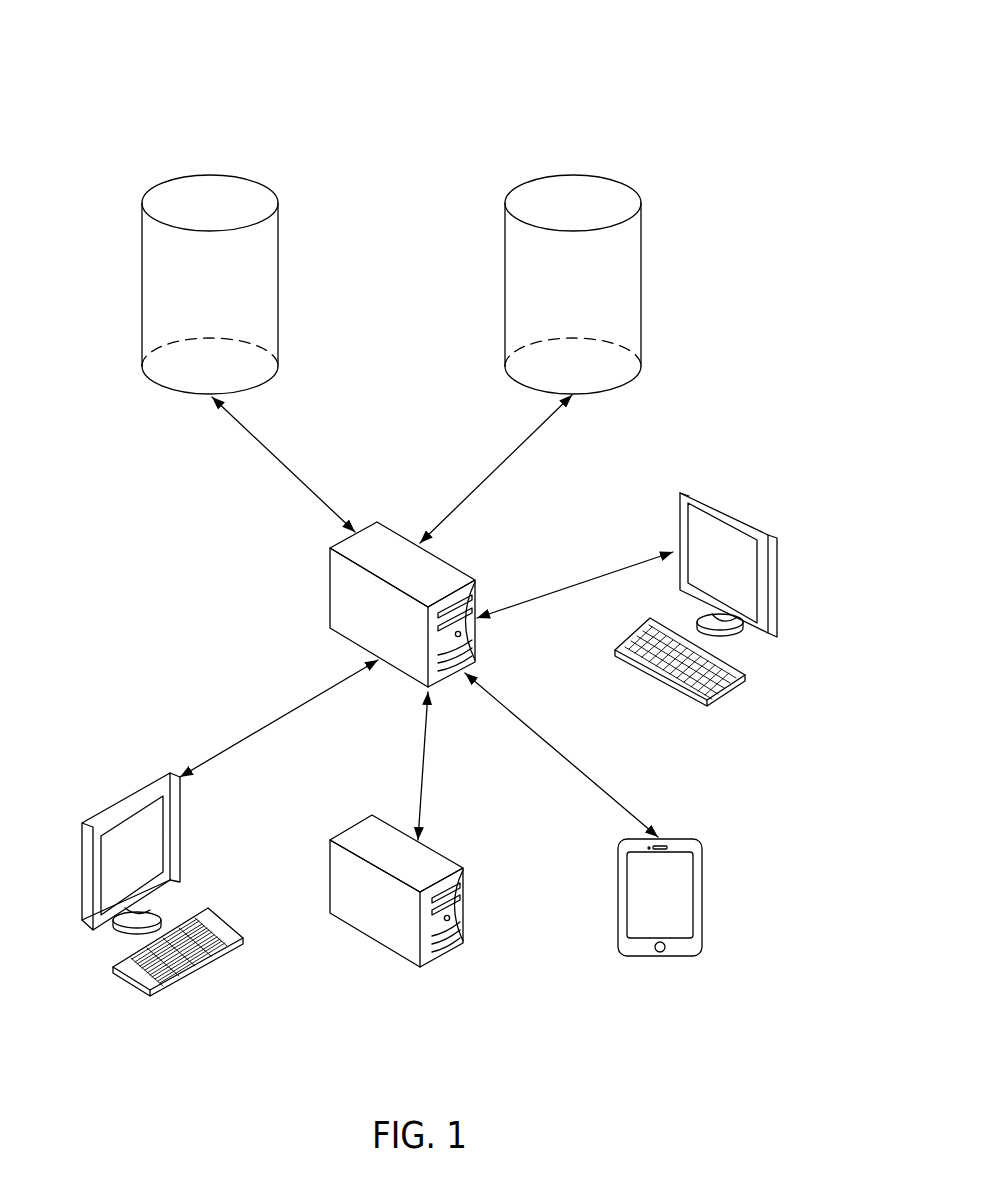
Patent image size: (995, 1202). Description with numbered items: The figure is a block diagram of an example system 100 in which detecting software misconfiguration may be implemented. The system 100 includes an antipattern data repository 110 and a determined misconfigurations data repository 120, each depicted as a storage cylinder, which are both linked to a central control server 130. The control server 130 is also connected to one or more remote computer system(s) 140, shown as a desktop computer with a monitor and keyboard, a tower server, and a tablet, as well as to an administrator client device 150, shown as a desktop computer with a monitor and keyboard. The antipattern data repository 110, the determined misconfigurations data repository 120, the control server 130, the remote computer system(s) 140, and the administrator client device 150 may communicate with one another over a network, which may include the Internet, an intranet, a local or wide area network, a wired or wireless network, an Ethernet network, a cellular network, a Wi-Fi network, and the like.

The system 100 is at (137, 52).
The antipattern data repository 110 is at (210, 175).
The determined misconfigurations data repository 120 is at (573, 172).
The control server 130 is at (328, 597).
The remote computer system(s) 140 is at (181, 827).
The administrator client device 150 is at (778, 585).